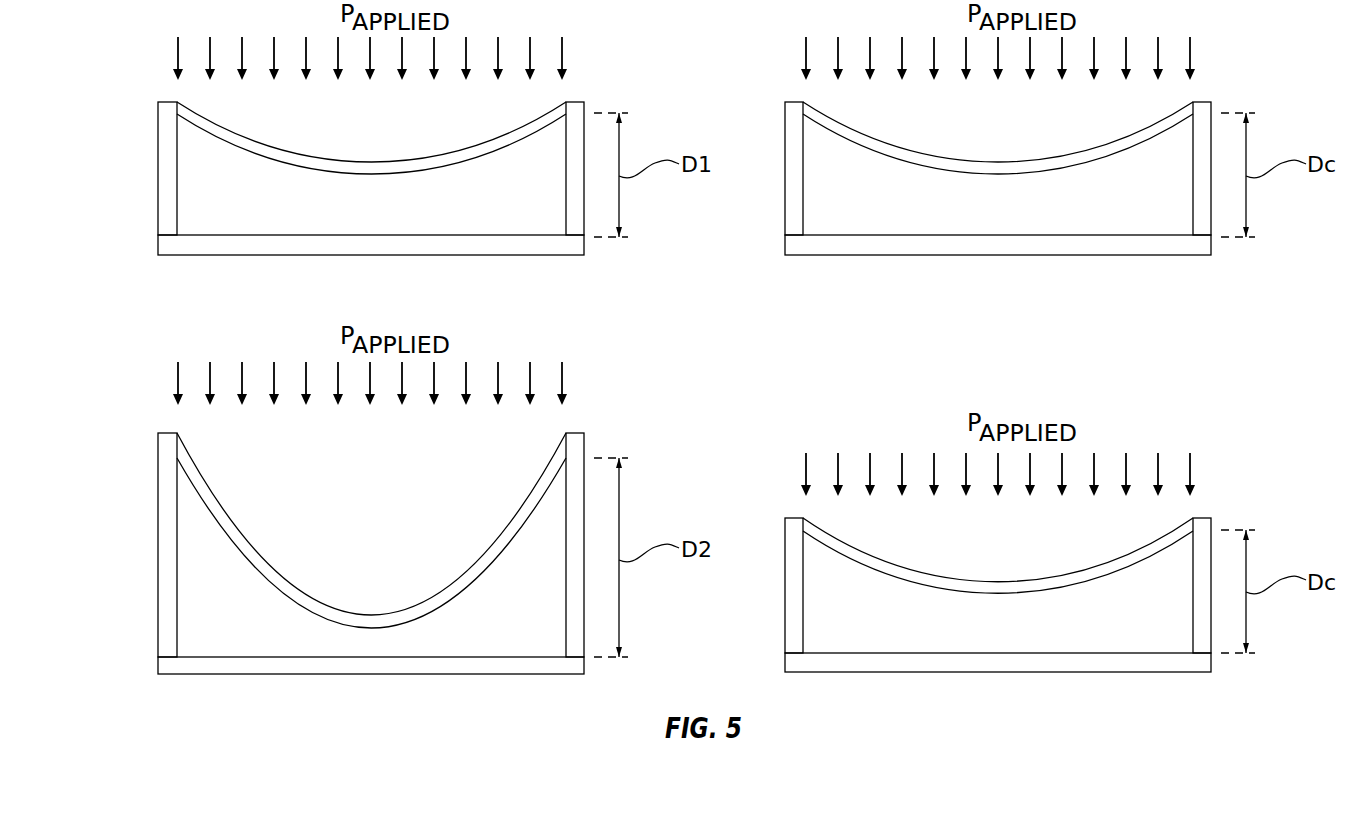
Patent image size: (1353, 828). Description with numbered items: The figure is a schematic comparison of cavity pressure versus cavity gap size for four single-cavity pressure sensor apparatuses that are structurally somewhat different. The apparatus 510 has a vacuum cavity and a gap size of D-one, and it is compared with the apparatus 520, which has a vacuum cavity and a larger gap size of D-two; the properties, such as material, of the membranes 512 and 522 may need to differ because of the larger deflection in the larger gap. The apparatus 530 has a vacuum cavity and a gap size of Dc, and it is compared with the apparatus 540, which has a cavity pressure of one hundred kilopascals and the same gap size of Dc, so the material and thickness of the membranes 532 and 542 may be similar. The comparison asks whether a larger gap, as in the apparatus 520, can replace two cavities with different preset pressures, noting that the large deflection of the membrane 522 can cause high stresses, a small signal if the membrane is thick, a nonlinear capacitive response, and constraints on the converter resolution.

The single-cavity pressure sensor apparatus 510 is at (164, 73).
The membrane 512 is at (337, 157).
The single-cavity pressure sensor apparatus 520 is at (165, 404).
The membrane 522 is at (309, 591).
The single-cavity pressure sensor apparatus 530 is at (786, 80).
The membrane 532 is at (964, 158).
The single-cavity pressure sensor apparatus 540 is at (787, 495).
The membrane 542 is at (964, 576).